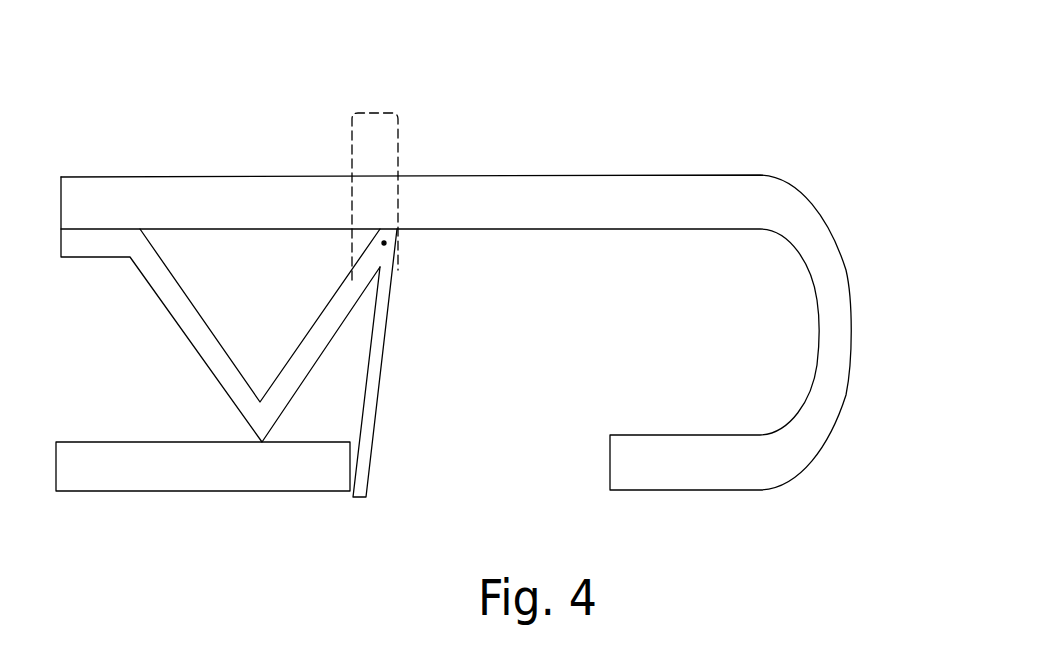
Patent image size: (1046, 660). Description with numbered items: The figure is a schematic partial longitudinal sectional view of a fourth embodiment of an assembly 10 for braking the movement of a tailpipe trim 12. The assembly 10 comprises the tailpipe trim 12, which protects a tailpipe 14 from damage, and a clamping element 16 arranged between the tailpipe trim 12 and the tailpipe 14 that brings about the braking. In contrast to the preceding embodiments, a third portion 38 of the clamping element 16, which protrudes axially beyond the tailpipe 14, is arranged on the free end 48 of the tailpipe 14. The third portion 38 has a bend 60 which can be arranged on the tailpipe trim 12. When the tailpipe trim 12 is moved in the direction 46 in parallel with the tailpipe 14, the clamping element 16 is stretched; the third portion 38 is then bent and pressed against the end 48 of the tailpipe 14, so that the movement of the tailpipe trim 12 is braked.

The assembly 10 is at (816, 116).
The tailpipe trim 12 is at (589, 208).
The tailpipe 14 is at (78, 472).
The clamping element 16 is at (186, 307).
The third portion 38 is at (375, 113).
The direction 46 is at (894, 338).
The free end 48 is at (370, 461).
The bend 60 is at (384, 243).